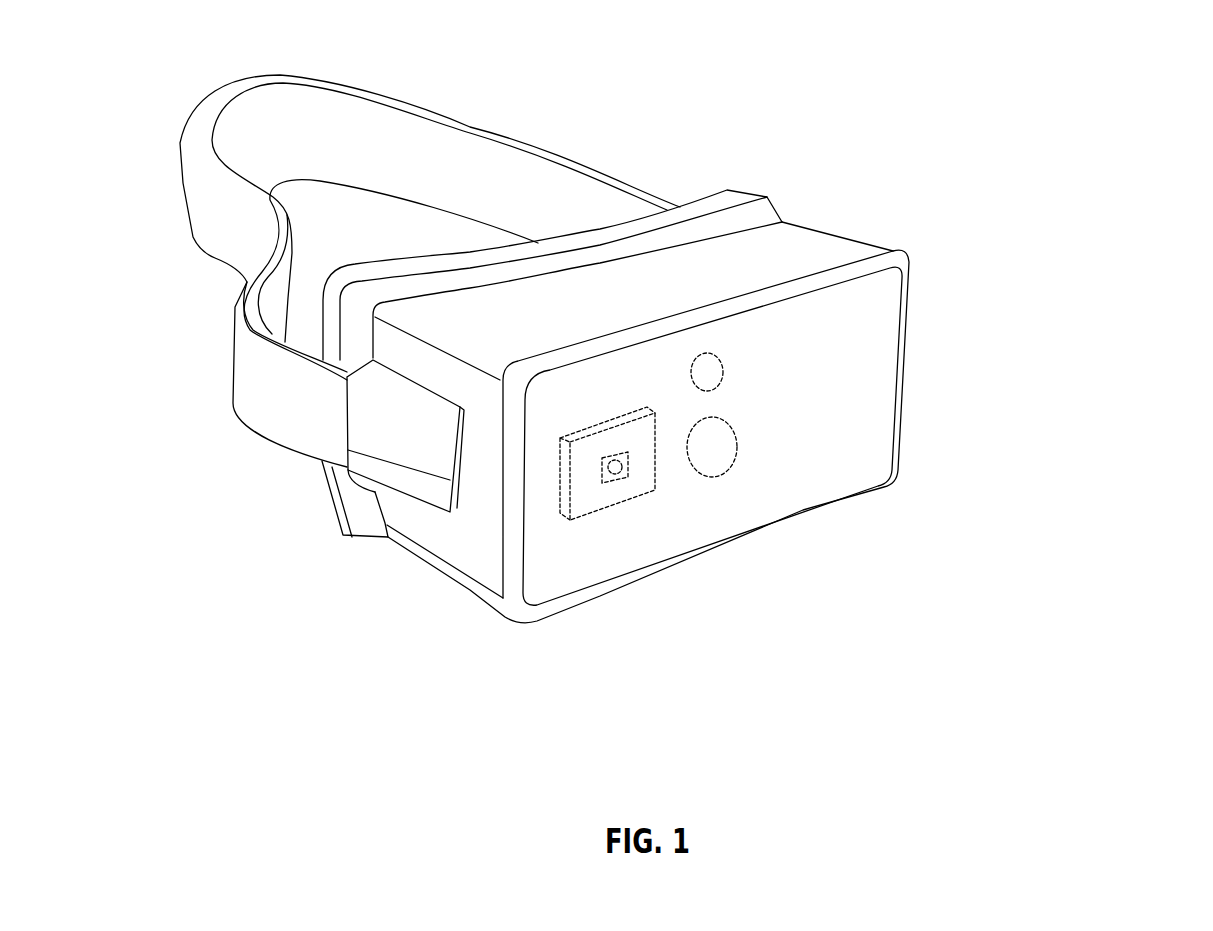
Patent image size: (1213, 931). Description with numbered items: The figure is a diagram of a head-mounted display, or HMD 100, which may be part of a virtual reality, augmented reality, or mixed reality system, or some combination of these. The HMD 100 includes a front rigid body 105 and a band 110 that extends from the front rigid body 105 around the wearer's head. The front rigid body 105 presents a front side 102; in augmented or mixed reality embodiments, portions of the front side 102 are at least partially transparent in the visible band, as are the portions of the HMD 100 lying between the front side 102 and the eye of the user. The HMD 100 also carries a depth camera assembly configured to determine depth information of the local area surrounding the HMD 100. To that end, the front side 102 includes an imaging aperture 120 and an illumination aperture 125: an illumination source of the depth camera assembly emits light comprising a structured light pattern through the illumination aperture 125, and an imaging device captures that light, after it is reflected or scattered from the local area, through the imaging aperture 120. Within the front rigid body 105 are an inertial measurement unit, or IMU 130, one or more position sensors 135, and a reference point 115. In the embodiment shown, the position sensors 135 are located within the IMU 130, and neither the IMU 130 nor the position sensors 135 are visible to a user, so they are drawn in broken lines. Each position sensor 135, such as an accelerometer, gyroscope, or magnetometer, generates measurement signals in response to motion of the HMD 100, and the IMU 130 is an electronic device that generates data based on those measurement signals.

The head-mounted display (HMD) 100 is at (1028, 58).
The front side 102 is at (815, 418).
The front rigid body 105 is at (907, 247).
The band 110 is at (553, 152).
The reference point 115 is at (615, 474).
The imaging aperture 120 is at (740, 447).
The illumination aperture 125 is at (720, 357).
The inertial measurement unit (IMU) 130 is at (657, 480).
The position sensors 135 is at (603, 483).